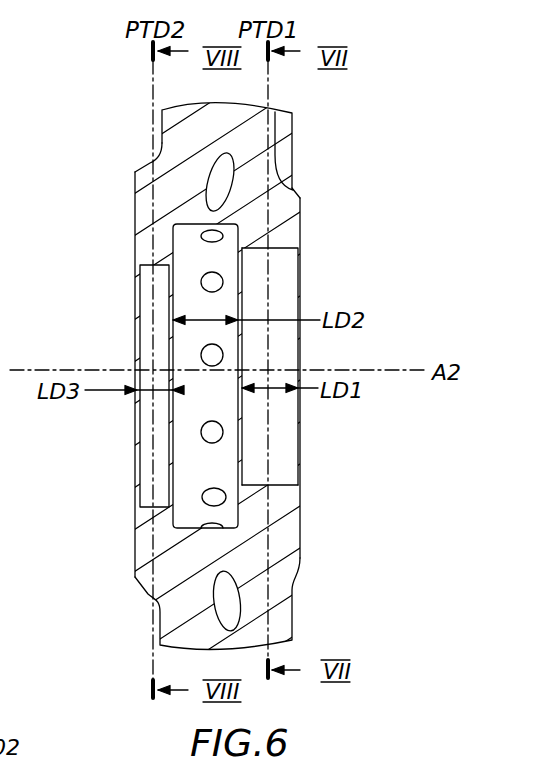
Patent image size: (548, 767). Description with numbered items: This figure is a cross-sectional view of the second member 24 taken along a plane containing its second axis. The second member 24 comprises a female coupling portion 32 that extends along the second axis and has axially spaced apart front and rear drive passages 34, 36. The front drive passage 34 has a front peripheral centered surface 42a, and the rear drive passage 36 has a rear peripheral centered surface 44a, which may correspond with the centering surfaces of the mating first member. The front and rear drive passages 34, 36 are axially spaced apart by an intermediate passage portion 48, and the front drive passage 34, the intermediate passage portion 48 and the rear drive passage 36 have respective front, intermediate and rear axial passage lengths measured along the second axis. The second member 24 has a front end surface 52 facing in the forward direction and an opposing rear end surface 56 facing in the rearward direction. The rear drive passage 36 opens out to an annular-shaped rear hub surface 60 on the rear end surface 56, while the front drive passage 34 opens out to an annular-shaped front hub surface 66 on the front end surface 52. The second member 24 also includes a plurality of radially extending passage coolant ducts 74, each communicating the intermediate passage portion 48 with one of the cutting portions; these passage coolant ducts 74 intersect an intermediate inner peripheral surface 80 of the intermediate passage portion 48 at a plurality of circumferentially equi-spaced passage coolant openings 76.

The second member 24 is at (318, 170).
The female coupling portion 32 is at (272, 424).
The front drive passage 34 is at (278, 254).
The rear drive passage 36 is at (150, 490).
The front peripheral centered surface 42a is at (238, 510).
The rear peripheral centered surface 44a is at (141, 267).
The intermediate passage portion 48 is at (186, 260).
The front end surface 52 is at (302, 233).
The rear end surface 56 is at (133, 213).
The rear hub surface 60 is at (150, 207).
The front hub surface 66 is at (300, 210).
The passage coolant duct 74 is at (220, 182).
The passage coolant opening 76 is at (211, 238).
The intermediate inner peripheral surface 80 is at (235, 472).